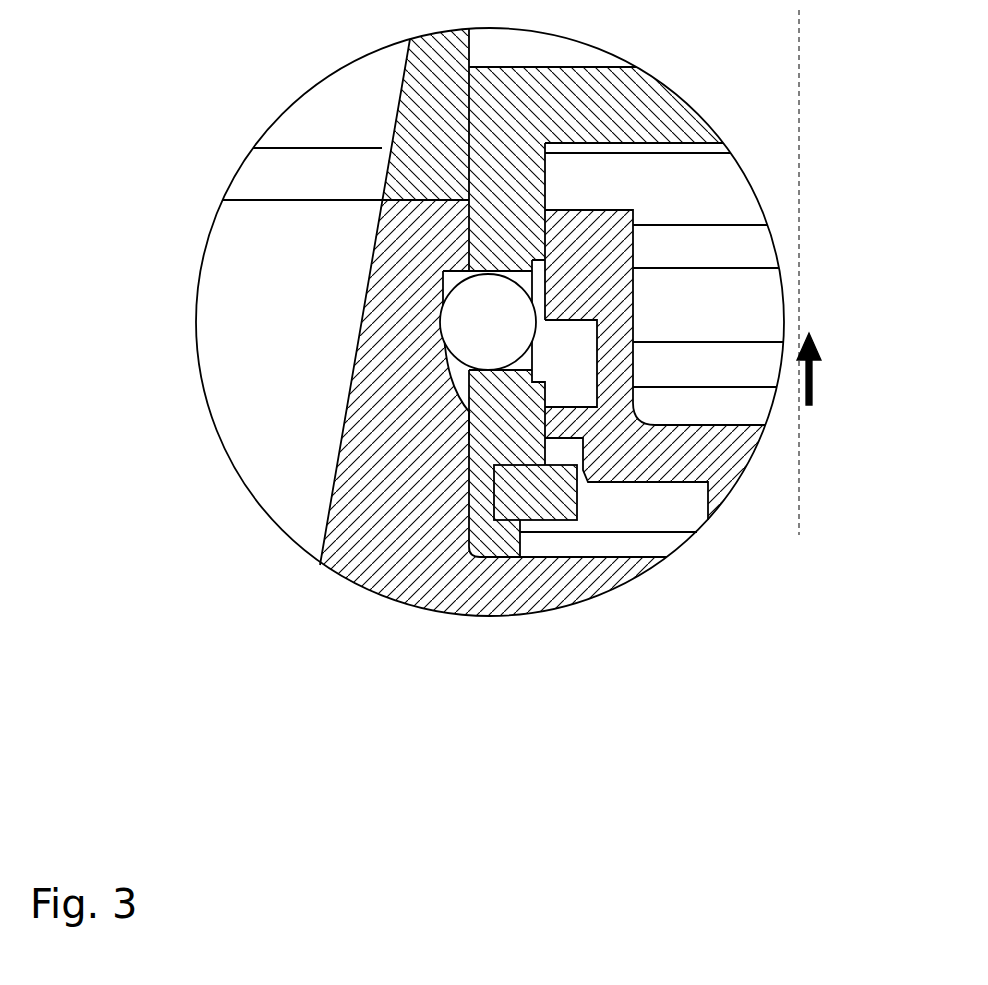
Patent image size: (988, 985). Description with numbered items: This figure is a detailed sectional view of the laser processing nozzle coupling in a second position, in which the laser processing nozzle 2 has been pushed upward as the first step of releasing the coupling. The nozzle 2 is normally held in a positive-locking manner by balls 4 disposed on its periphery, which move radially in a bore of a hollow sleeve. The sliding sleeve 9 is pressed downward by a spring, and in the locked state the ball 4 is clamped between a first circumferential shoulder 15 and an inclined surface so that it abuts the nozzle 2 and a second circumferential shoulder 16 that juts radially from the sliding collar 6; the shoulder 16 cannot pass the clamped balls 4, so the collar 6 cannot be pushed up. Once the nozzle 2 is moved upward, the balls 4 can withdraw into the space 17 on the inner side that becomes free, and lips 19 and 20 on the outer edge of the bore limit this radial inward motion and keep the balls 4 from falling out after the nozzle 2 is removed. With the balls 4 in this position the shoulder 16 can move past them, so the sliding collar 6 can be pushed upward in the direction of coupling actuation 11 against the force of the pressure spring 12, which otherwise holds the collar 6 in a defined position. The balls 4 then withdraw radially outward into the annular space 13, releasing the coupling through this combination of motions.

The laser processing nozzle 2 is at (485, 597).
The ball 4 is at (467, 320).
The sliding collar 6 is at (688, 450).
The sliding sleeve 9 is at (428, 128).
The direction of coupling actuation 11 is at (815, 363).
The pressure spring 12 is at (703, 200).
The annular space 13 is at (575, 365).
The first circumferential shoulder 15 is at (438, 298).
The second circumferential shoulder 16 is at (542, 320).
The space 17 is at (457, 373).
The lip 19 is at (457, 268).
The lip 20 is at (457, 385).